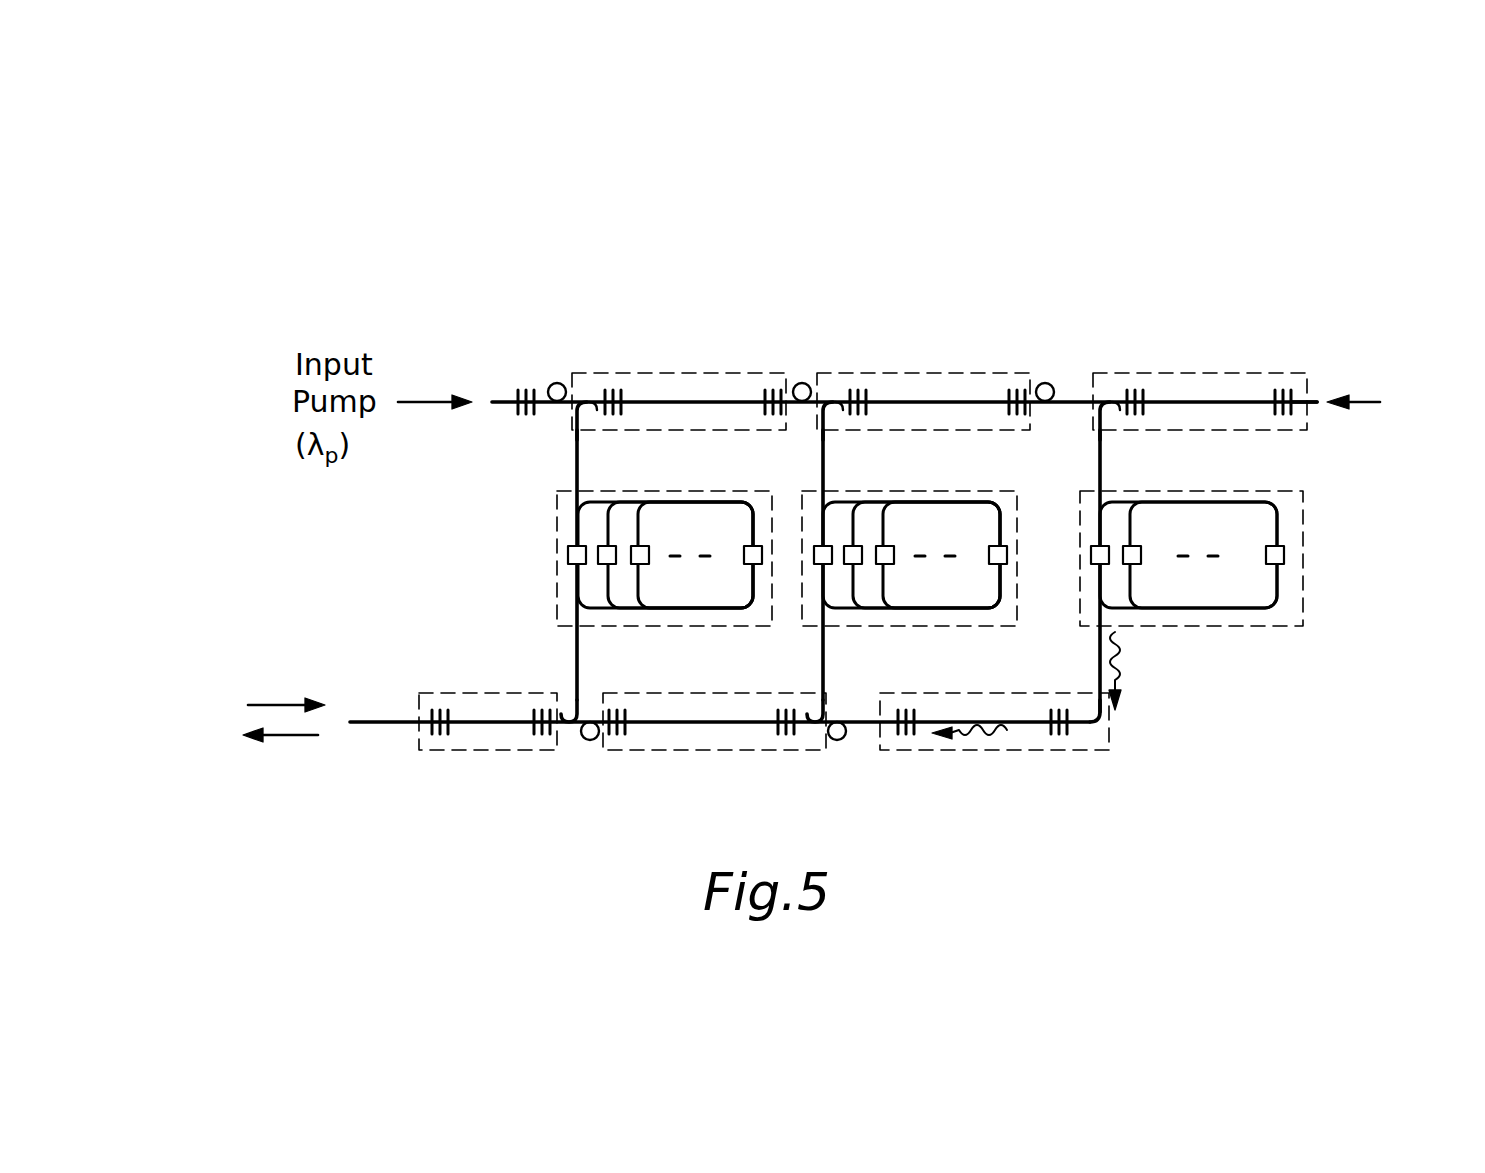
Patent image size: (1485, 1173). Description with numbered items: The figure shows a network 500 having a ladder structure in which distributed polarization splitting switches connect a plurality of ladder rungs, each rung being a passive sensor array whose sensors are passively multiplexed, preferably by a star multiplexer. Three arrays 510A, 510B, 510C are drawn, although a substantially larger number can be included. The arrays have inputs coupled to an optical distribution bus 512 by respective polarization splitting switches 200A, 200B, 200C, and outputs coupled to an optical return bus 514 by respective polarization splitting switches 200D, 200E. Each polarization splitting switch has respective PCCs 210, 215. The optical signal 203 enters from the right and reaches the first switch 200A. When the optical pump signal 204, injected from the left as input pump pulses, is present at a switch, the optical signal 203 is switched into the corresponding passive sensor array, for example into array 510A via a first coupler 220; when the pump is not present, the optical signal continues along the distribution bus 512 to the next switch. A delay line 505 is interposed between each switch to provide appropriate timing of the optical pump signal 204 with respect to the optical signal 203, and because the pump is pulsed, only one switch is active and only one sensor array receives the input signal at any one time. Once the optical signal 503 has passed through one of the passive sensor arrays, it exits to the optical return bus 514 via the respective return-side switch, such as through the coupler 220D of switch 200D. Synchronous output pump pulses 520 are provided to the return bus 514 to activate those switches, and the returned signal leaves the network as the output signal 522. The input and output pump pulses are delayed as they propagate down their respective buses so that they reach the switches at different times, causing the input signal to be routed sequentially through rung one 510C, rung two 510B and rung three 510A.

The network 500 is at (781, 262).
The optical pump signal 204 is at (415, 400).
The optical signal 203 is at (1355, 398).
The polarization splitting switch 200A is at (1213, 372).
The polarization splitting switch 200B is at (960, 372).
The polarization splitting switch 200C is at (666, 372).
The polarization splitting switch 200D is at (1000, 752).
The polarization splitting switch 200E is at (672, 752).
The delay line 505 is at (800, 381).
The first coupler 220 is at (1103, 400).
The coupler 220D is at (1095, 725).
The optical distribution bus 512 is at (1308, 400).
The PCC 210 is at (1293, 406).
The PCC 215 is at (1143, 420).
The passive sensor array 510A is at (1303, 585).
The passive sensor array 510B is at (930, 490).
The passive sensor array 510C is at (708, 490).
The optical signal 503 is at (1118, 655).
The optical return bus 514 is at (364, 721).
The output pump pulses 520 is at (290, 705).
The output signal 522 is at (300, 738).